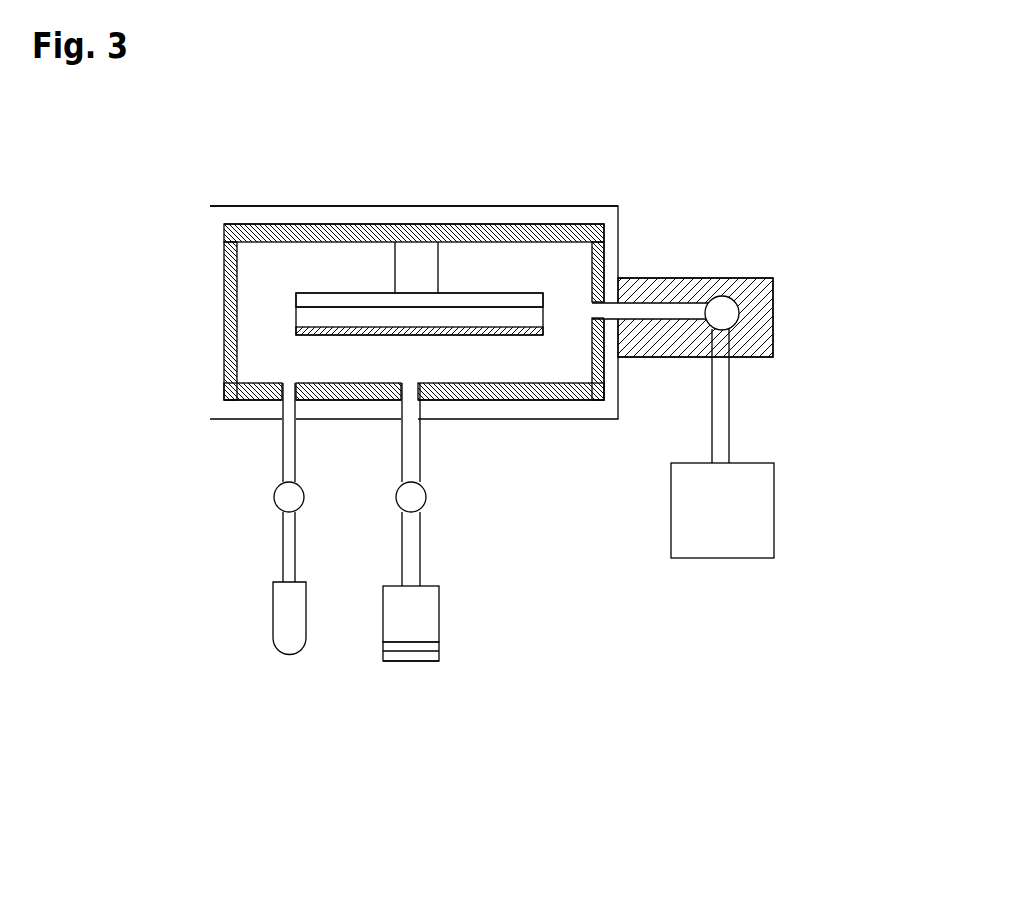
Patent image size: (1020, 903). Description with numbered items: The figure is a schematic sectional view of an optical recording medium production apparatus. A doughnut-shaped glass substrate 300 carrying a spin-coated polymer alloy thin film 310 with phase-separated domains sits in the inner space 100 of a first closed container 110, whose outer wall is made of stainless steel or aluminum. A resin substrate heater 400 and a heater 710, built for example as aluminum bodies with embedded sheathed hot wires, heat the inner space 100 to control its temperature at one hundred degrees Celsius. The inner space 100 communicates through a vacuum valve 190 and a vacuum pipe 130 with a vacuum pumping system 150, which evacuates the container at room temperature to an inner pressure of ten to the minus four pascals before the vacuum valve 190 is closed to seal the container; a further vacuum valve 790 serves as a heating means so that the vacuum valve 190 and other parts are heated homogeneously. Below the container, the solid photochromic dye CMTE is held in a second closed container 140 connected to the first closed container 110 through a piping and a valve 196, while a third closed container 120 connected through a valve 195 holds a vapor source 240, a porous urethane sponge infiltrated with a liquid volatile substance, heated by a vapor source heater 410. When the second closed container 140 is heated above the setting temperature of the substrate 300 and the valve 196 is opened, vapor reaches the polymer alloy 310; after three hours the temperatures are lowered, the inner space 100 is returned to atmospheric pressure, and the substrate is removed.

The inner space 100 is at (273, 280).
The first closed container 110 is at (400, 206).
The resin substrate heater 400 is at (468, 294).
The glass substrate 300 is at (475, 316).
The heater 710 is at (592, 222).
The vacuum valve 790 is at (751, 278).
The vacuum valve 190 is at (727, 312).
The vacuum pipe 130 is at (727, 403).
The vacuum pumping system 150 is at (738, 515).
The polymer alloy thin film 310 is at (363, 335).
The valve 196 is at (285, 500).
The valve 195 is at (415, 497).
The second closed container 140 is at (288, 655).
The third closed container 120 is at (425, 603).
The vapor source 240 is at (435, 647).
The vapor source heater 410 is at (417, 662).